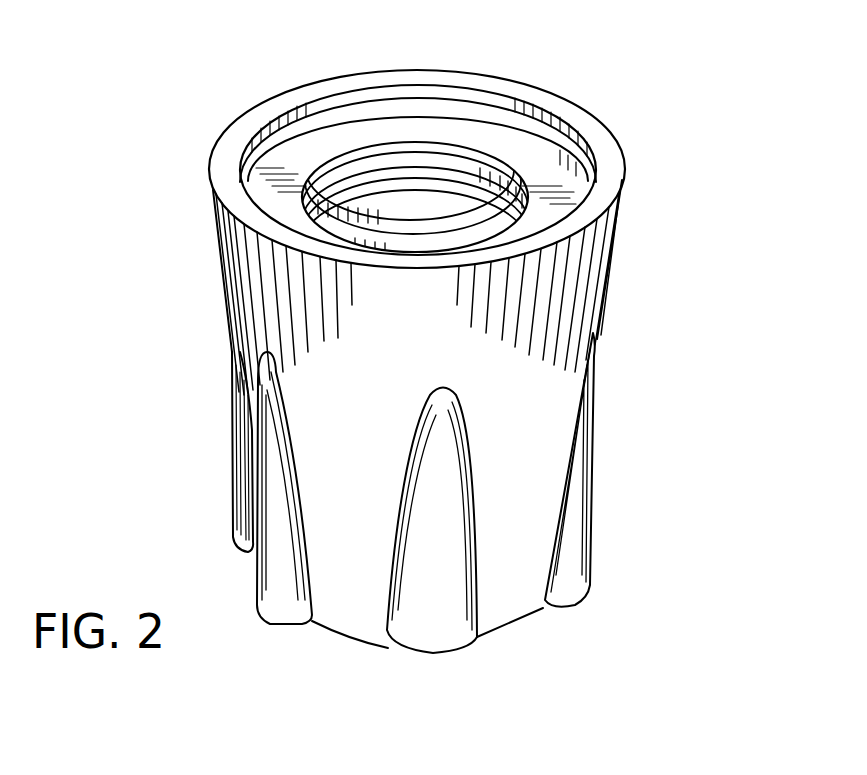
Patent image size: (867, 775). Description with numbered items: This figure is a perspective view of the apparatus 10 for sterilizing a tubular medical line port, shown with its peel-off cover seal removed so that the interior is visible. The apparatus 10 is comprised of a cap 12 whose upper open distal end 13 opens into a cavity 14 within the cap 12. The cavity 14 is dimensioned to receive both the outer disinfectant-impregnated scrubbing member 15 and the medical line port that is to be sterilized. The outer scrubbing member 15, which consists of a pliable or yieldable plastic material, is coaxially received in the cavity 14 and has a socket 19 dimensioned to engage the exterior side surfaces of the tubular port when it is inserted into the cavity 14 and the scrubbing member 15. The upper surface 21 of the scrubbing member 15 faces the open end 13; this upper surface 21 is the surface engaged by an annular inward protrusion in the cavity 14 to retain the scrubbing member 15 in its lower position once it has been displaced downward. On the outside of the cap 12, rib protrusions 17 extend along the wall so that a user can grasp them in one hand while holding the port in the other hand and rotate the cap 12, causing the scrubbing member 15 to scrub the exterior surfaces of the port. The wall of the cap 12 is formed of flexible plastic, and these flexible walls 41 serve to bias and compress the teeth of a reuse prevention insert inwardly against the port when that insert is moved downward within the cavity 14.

The apparatus 10 is at (147, 214).
The cap 12 is at (606, 326).
The upper open distal end 13 is at (224, 150).
The cavity 14 is at (273, 137).
The outer disinfectant-impregnated scrubbing member 15 is at (572, 188).
The socket 19 is at (420, 203).
The upper surface 21 is at (347, 138).
The flexible walls 41 is at (233, 503).
The rib protrusions 17 is at (590, 565).